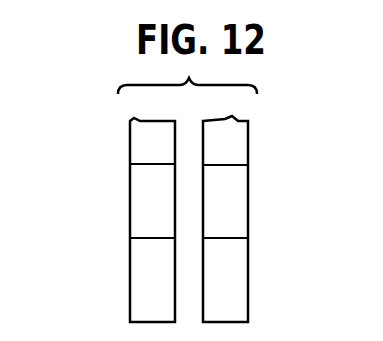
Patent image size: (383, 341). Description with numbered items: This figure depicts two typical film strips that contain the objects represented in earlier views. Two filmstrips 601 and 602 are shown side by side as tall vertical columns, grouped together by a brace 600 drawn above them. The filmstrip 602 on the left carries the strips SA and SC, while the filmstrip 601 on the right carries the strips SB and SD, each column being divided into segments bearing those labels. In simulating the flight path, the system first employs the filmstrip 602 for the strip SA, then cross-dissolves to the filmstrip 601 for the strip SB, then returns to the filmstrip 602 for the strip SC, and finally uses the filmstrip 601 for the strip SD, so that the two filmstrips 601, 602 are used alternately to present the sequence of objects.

The memory block (brace grouping both columns) 600 is at (187, 86).
The filmstrip 601 is at (238, 142).
The filmstrip 602 is at (135, 140).